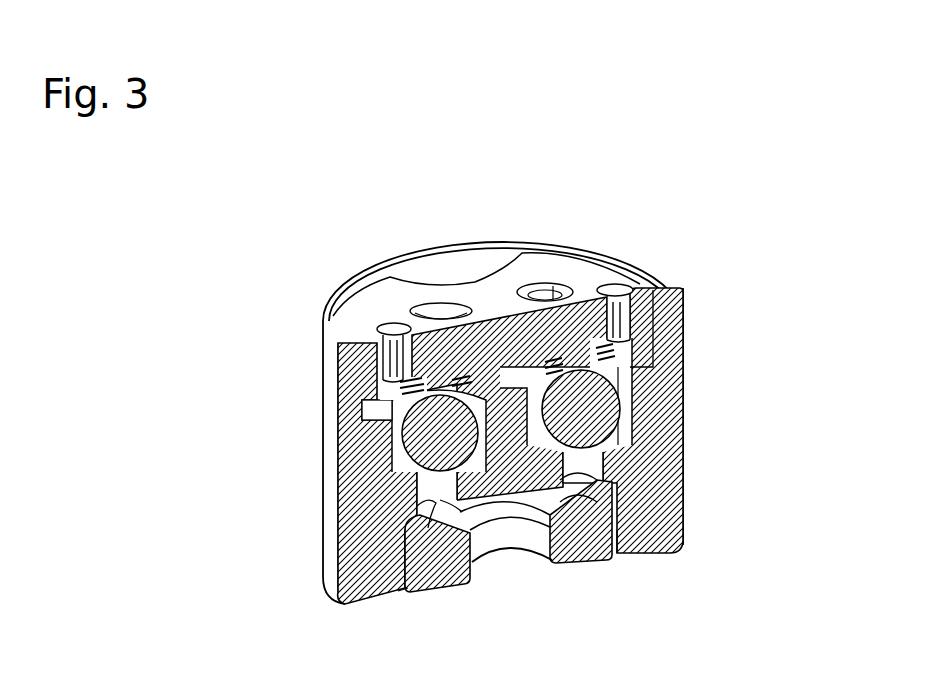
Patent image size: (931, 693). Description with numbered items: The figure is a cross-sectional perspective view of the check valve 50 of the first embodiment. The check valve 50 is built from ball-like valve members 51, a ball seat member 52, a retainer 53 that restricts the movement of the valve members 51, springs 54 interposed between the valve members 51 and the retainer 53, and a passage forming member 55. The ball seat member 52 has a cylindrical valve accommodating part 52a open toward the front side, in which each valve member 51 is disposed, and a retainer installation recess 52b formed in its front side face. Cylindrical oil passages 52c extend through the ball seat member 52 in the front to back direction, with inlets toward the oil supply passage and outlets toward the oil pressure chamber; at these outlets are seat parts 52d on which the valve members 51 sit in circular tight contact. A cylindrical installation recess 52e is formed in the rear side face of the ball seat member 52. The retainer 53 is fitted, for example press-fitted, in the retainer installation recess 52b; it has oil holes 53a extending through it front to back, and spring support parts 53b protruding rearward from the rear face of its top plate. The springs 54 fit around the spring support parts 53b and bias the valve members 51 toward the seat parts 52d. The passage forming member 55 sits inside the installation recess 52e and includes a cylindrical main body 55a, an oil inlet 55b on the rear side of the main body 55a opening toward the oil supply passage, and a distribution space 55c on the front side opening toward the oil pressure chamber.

The check valve 50 is at (262, 198).
The valve member 51 is at (433, 438).
The ball seat member 52 is at (683, 528).
The valve accommodating part 52a is at (388, 418).
The retainer installation recess 52b is at (643, 283).
The oil passage 52c is at (440, 528).
The seat part 52d is at (432, 486).
The installation recess 52e is at (618, 552).
The retainer 53 is at (565, 267).
The oil hole 53a is at (393, 337).
The spring support part 53b is at (435, 385).
The spring 54 is at (425, 392).
The passage forming member 55 is at (585, 548).
The main body 55a is at (450, 592).
The oil inlet 55b is at (508, 537).
The distribution space 55c is at (400, 588).